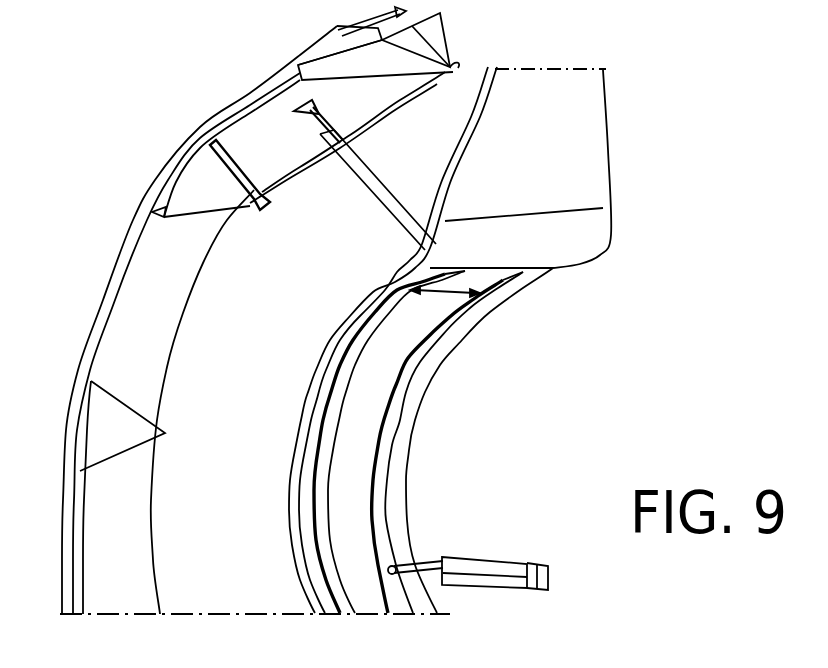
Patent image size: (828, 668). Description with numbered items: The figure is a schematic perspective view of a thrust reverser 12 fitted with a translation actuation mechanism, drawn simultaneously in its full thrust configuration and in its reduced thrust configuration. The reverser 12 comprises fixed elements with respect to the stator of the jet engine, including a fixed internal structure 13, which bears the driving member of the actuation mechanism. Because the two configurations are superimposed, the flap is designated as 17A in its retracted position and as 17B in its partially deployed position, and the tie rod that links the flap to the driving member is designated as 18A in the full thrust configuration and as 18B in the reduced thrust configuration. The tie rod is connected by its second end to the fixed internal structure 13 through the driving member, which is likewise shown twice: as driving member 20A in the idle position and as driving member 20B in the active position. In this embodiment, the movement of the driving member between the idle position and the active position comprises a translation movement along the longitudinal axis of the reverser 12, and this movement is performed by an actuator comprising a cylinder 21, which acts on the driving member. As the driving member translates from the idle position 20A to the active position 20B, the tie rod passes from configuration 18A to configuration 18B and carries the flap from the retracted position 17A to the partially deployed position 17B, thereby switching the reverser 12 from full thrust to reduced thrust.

The reverser 12 is at (580, 39).
The fixed internal structure 13 is at (577, 167).
The flap in the retracted position 17A is at (258, 133).
The flap in the partially deployed position 17B is at (280, 188).
The tie rod in the full thrust configuration 18A is at (355, 160).
The tie rod in the reduced thrust configuration 18B is at (385, 186).
The driving member in the idle position 20A is at (347, 383).
The driving member in the active position 20B is at (398, 405).
The cylinder 21 is at (485, 556).